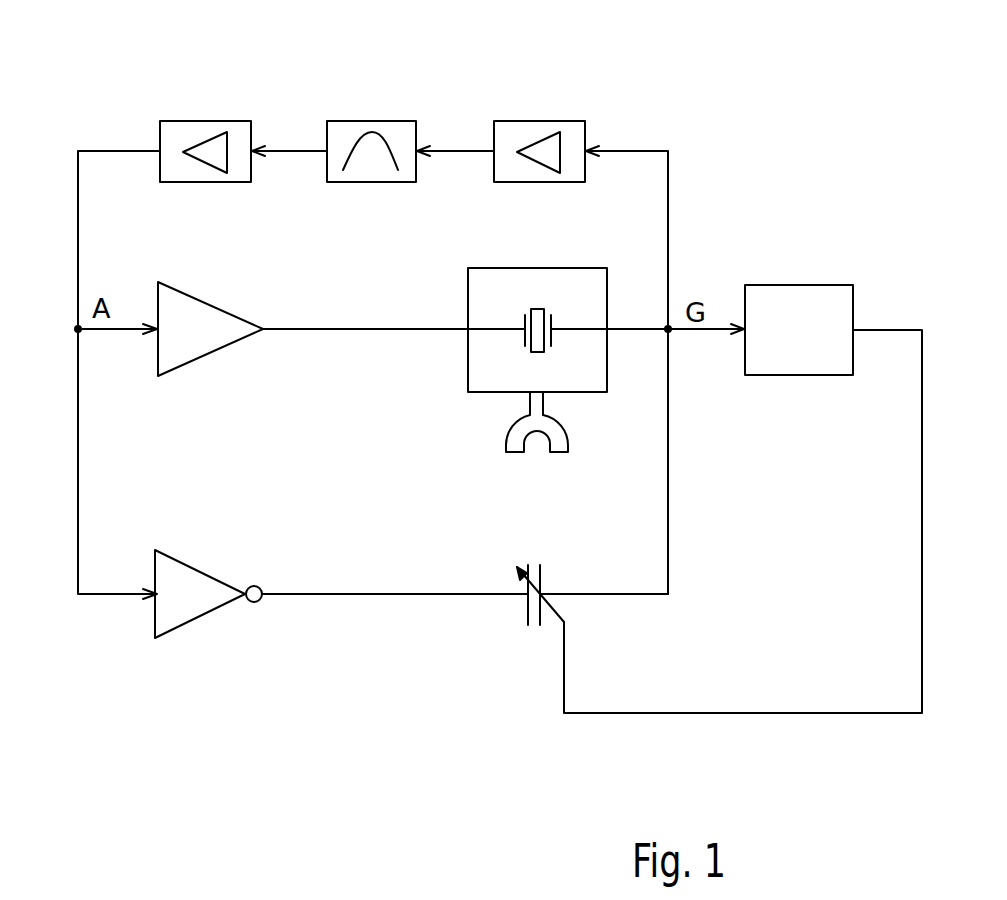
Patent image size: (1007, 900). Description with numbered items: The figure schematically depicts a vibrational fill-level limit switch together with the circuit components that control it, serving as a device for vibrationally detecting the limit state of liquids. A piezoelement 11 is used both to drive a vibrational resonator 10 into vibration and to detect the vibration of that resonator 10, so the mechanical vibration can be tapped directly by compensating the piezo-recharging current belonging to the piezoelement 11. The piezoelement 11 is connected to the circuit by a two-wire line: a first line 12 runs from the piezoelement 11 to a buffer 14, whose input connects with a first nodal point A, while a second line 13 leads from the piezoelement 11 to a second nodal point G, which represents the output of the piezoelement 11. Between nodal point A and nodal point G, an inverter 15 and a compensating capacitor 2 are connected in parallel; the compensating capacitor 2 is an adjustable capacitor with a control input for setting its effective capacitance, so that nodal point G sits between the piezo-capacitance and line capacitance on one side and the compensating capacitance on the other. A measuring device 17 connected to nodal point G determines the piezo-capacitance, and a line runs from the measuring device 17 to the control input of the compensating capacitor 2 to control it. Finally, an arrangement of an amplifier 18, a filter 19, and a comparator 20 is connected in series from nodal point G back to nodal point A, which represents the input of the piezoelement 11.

The compensating capacitor 2 is at (542, 583).
The vibrational resonator 10 is at (506, 435).
The piezoelement 11 is at (468, 353).
The first line 12 is at (332, 329).
The second line 13 is at (623, 329).
The buffer 14 is at (217, 302).
The inverter 15 is at (192, 563).
The measuring device 17 is at (798, 285).
The amplifier 18 is at (550, 121).
The filter 19 is at (382, 121).
The comparator 20 is at (218, 121).